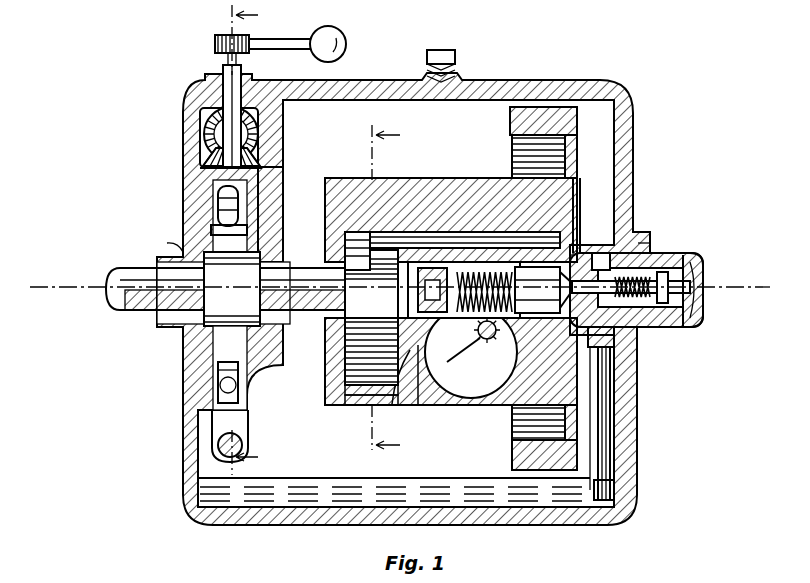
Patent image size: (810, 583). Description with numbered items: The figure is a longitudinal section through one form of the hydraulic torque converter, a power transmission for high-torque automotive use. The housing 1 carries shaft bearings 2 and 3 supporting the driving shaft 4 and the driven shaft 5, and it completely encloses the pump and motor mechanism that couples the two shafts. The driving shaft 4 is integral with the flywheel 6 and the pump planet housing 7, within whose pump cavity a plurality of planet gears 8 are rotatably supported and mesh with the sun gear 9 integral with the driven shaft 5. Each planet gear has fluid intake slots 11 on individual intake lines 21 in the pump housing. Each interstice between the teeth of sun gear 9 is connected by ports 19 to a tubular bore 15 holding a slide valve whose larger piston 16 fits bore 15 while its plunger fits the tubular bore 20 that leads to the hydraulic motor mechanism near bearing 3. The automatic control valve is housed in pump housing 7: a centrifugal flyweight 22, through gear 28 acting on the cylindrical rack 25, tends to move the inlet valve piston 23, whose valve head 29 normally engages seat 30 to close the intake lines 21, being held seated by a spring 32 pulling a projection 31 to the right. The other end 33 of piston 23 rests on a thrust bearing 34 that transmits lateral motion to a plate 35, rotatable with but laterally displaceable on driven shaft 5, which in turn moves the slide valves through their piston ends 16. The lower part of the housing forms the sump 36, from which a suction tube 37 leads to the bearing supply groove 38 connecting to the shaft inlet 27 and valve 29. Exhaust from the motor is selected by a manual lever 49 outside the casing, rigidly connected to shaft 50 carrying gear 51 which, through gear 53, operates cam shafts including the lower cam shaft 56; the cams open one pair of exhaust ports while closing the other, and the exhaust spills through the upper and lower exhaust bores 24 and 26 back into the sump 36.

The housing 1 is at (575, 82).
The shaft bearing 2 is at (519, 290).
The shaft bearing 3 is at (211, 239).
The driving shaft 4 is at (705, 277).
The driven shaft 5 is at (133, 295).
The flywheel 6 is at (540, 118).
The pump planet housing 7 is at (350, 398).
The planet gears 8 is at (370, 405).
The sun gear 9 is at (345, 262).
The fluid intake slots 11 is at (348, 253).
The tubular bore 15 is at (345, 322).
The piston 16 is at (380, 195).
The ports 19 is at (345, 345).
The tubular bore 20 is at (270, 383).
The intake lines 21 is at (406, 232).
The centrifugal flyweight 22 is at (478, 338).
The inlet valve piston 23 is at (525, 178).
The upper exhaust bore 24 is at (218, 195).
The cylindrical rack 25 is at (478, 265).
The lower exhaust bore 26 is at (212, 383).
The shaft inlet 27 is at (615, 250).
The gear 28 is at (492, 342).
The valve head 29 is at (580, 200).
The seat 30 is at (580, 222).
The projection 31 is at (640, 285).
The spring 32 is at (700, 318).
The end of piston 33 is at (466, 395).
The thrust bearing 34 is at (418, 404).
The plate 35 is at (392, 404).
The sump 36 is at (394, 491).
The suction tube 37 is at (612, 435).
The bearing supply groove 38 is at (636, 338).
The manual lever 49 is at (330, 30).
The shaft 50 is at (243, 118).
The gear 51 is at (252, 160).
The gear 53 is at (260, 137).
The lower cam shaft 56 is at (248, 450).